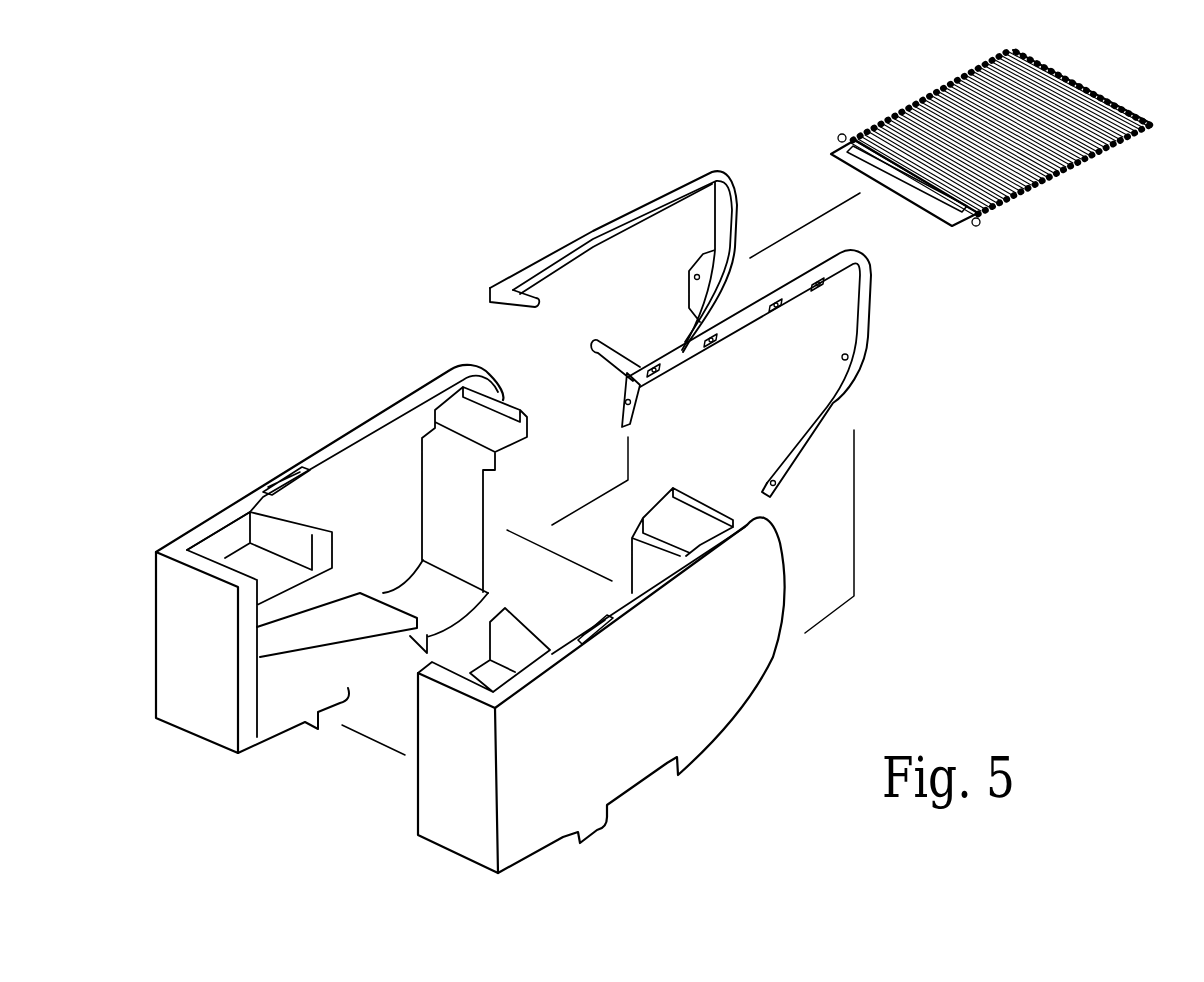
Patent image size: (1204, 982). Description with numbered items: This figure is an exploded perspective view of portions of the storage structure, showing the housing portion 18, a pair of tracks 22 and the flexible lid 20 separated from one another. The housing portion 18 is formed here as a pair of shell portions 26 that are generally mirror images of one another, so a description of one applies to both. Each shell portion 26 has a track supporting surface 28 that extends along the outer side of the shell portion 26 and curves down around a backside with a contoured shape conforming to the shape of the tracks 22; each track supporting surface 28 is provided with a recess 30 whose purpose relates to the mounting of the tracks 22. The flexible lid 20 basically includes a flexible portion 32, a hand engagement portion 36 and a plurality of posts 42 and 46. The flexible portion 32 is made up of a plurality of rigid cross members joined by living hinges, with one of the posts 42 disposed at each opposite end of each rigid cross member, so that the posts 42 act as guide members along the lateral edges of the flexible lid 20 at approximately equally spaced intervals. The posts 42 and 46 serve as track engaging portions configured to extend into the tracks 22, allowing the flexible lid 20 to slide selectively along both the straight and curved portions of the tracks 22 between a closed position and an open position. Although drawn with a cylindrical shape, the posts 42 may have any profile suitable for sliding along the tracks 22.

The housing portion 18 is at (470, 627).
The flexible lid 20 is at (985, 181).
The tracks 22 is at (750, 310).
The shell portions 26 is at (407, 857).
The track supporting surface 28 is at (630, 602).
The recess 30 is at (580, 633).
The flexible portion 32 is at (1036, 188).
The hand engagement portion 36 is at (947, 223).
The posts 42 is at (1063, 175).
The posts 46 is at (978, 223).